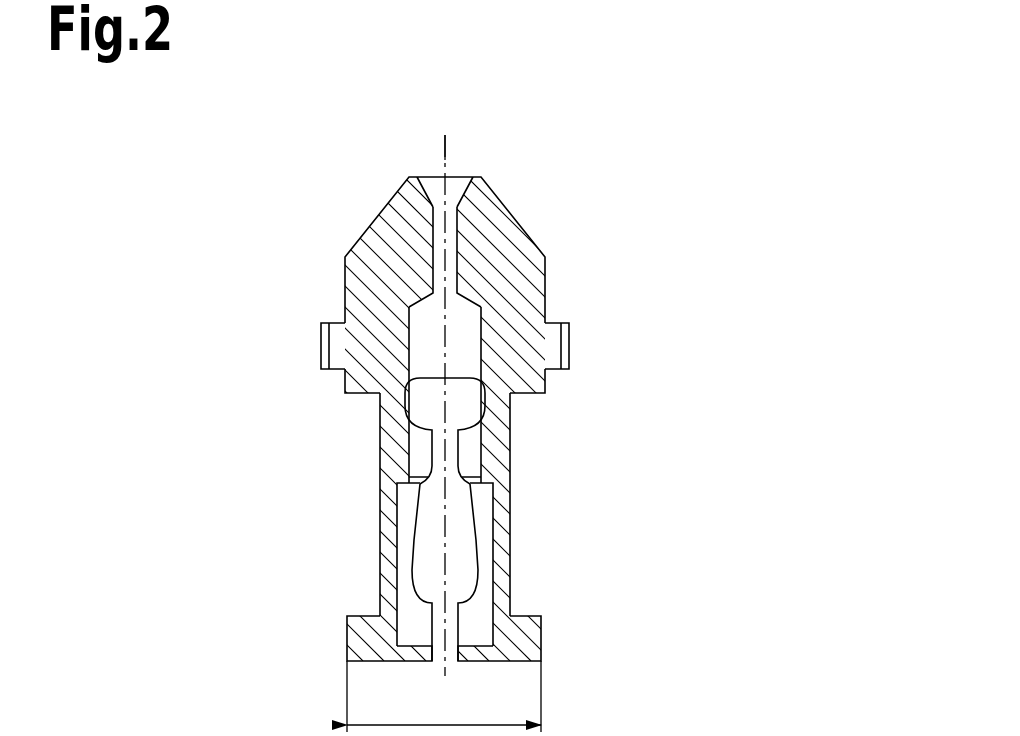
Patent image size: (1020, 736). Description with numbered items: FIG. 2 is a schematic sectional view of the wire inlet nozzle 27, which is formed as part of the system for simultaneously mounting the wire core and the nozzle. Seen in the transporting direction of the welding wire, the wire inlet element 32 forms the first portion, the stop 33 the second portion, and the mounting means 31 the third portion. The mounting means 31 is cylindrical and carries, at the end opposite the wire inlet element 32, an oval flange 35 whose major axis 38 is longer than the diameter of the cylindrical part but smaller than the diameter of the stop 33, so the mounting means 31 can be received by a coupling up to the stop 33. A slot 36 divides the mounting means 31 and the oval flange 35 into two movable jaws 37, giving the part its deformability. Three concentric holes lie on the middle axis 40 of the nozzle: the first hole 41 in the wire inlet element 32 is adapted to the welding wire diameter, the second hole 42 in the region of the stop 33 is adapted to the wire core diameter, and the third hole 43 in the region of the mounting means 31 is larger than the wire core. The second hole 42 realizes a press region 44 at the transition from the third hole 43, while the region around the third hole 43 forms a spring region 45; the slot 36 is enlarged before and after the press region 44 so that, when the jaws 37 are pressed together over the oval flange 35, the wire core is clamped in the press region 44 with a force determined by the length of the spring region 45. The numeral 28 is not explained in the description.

The wire inlet nozzle 27 is at (637, 112).
The longitudinal axis 28 is at (430, 140).
The mounting means 31 is at (380, 440).
The wire inlet element 32 is at (525, 235).
The stop 33 is at (590, 358).
The oval flange 35 is at (525, 640).
The slot 36 is at (457, 563).
The jaws 37 is at (393, 462).
The major axis 38 is at (444, 696).
The middle axis 40 is at (447, 152).
The first hole 41 is at (440, 242).
The second hole 42 is at (422, 350).
The third hole 43 is at (408, 533).
The press region 44 is at (483, 475).
The spring region 45 is at (482, 522).